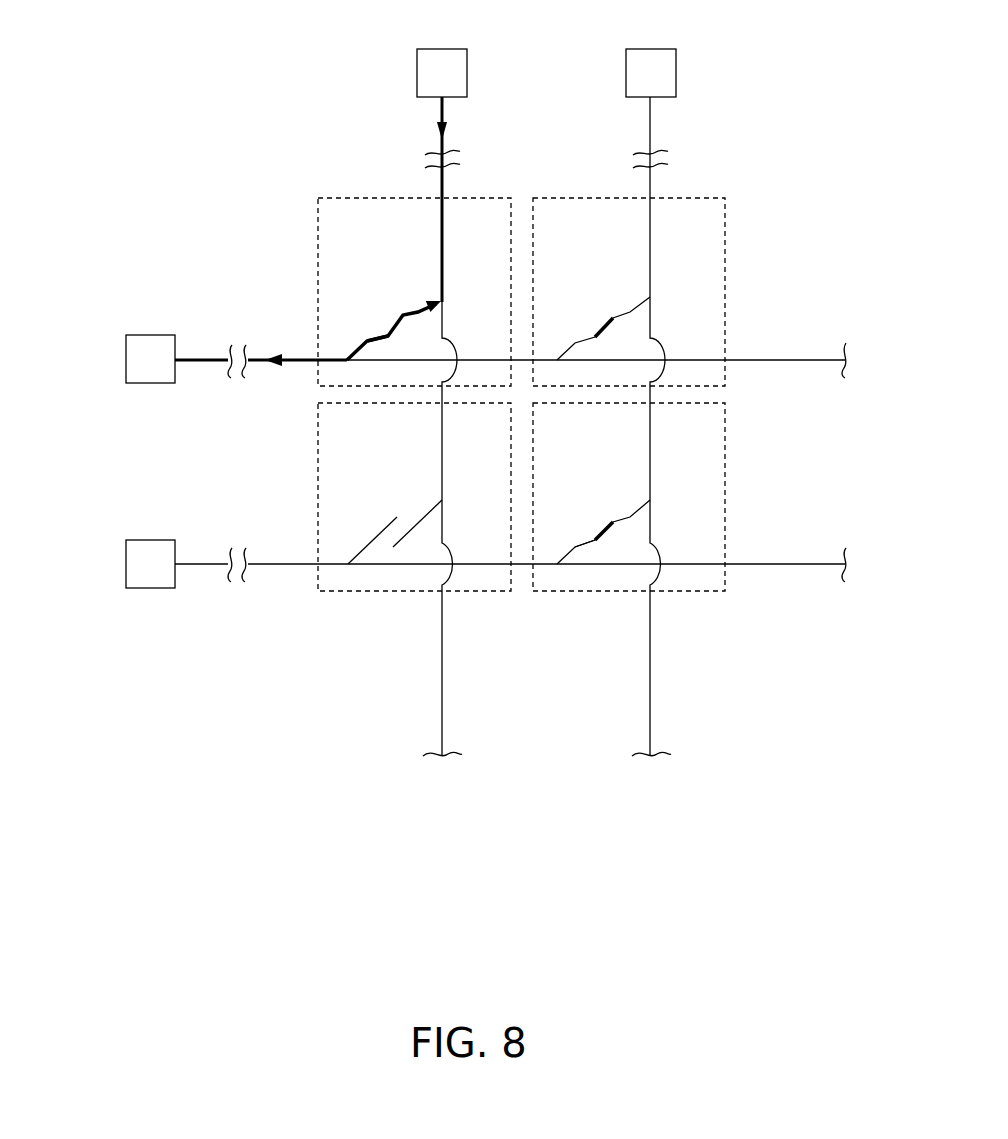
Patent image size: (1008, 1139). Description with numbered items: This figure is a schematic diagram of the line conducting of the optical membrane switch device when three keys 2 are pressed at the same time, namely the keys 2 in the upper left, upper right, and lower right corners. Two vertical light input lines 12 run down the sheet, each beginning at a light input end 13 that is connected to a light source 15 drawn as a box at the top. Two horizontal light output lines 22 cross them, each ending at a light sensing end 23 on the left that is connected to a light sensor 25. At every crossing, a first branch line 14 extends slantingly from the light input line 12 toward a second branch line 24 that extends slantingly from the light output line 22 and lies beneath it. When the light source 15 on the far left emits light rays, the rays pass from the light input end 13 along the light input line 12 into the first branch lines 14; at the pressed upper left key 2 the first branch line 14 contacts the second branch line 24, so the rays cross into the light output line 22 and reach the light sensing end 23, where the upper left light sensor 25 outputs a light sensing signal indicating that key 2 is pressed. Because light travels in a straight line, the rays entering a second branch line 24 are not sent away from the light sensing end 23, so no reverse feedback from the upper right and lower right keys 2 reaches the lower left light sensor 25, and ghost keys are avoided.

The key 2 is at (310, 225).
The light input line 12 is at (442, 186).
The light input end 13 is at (442, 121).
The first branch line 14 is at (417, 312).
The light source 15 is at (417, 72).
The light output line 22 is at (330, 360).
The light sensing end 23 is at (192, 362).
The second branch line 24 is at (368, 338).
The light sensor 25 is at (126, 358).